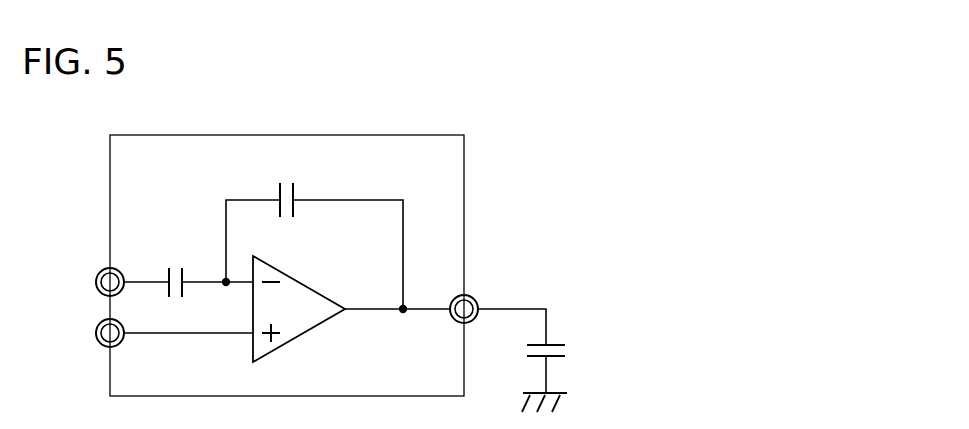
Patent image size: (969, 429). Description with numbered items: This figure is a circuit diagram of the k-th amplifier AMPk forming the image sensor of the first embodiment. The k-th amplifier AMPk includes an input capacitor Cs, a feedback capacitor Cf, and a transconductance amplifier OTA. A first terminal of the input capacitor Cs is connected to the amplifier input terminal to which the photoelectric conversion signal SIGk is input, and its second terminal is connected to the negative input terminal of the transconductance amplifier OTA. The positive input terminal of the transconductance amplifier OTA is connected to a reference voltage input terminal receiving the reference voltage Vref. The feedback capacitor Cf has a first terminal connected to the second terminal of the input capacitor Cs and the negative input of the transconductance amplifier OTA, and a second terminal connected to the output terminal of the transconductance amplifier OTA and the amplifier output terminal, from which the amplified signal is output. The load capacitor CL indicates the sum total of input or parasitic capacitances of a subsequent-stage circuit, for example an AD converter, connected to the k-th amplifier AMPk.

The k-th amplifier AMPk is at (396, 135).
The photoelectric conversion signal SIGk is at (79, 282).
The reference voltage Vref is at (79, 333).
The input capacitor Cs is at (188, 269).
The feedback capacitor Cf is at (283, 188).
The transconductance amplifier OTA is at (313, 283).
The load capacitor CL is at (536, 360).